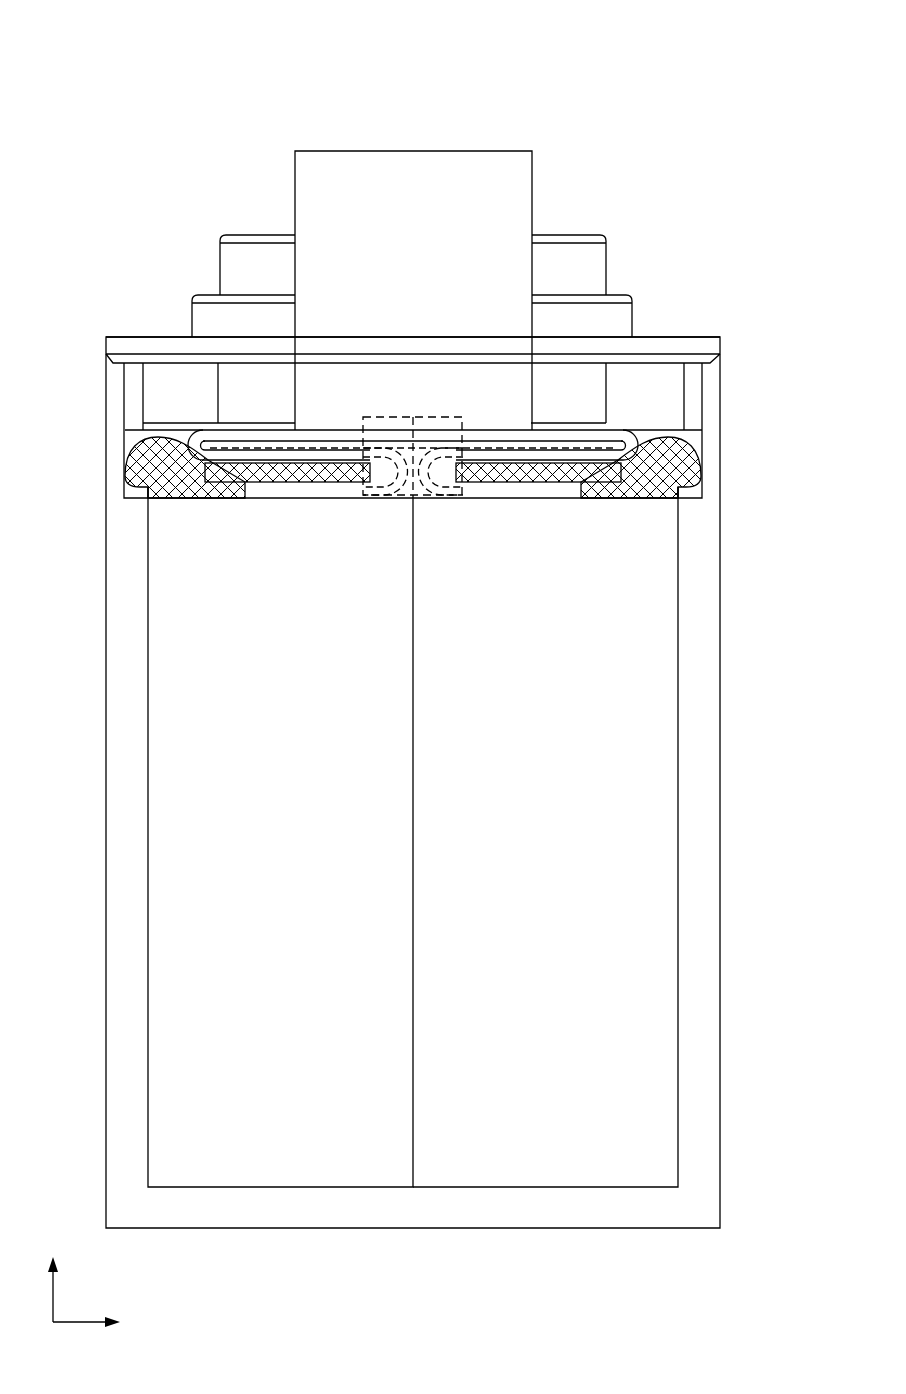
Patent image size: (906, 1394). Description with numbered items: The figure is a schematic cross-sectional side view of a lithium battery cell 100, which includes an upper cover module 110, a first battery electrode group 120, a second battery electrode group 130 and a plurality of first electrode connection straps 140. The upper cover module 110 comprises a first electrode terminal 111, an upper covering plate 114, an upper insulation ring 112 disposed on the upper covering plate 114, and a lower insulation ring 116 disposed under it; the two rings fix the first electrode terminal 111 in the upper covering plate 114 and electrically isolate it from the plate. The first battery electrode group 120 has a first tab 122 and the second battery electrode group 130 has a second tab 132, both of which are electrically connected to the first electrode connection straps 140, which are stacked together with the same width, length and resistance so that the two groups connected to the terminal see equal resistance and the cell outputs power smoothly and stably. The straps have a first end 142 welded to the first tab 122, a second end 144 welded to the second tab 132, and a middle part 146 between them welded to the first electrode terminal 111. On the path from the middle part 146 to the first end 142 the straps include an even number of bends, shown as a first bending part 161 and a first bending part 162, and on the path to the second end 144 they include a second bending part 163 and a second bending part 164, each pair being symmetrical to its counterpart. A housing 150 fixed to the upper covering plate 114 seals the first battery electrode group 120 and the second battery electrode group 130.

The lithium battery cell 100 is at (145, 78).
The upper cover module 110 is at (642, 208).
The first electrode terminal 111 is at (520, 172).
The upper insulation ring 112 is at (226, 262).
The upper covering plate 114 is at (148, 342).
The lower insulation ring 116 is at (148, 375).
The first battery electrode group 120 is at (170, 713).
The first tab 122 is at (165, 497).
The second battery electrode group 130 is at (663, 716).
The second tab 132 is at (678, 497).
The first electrode connection straps 140 is at (628, 430).
The first end 142 is at (258, 490).
The second end 144 is at (568, 490).
The middle part 146 is at (365, 420).
The housing 150 is at (700, 665).
The first bending part 161 is at (370, 497).
The first bending part 162 is at (148, 433).
The second bending part 163 is at (455, 497).
The second bending part 164 is at (640, 440).